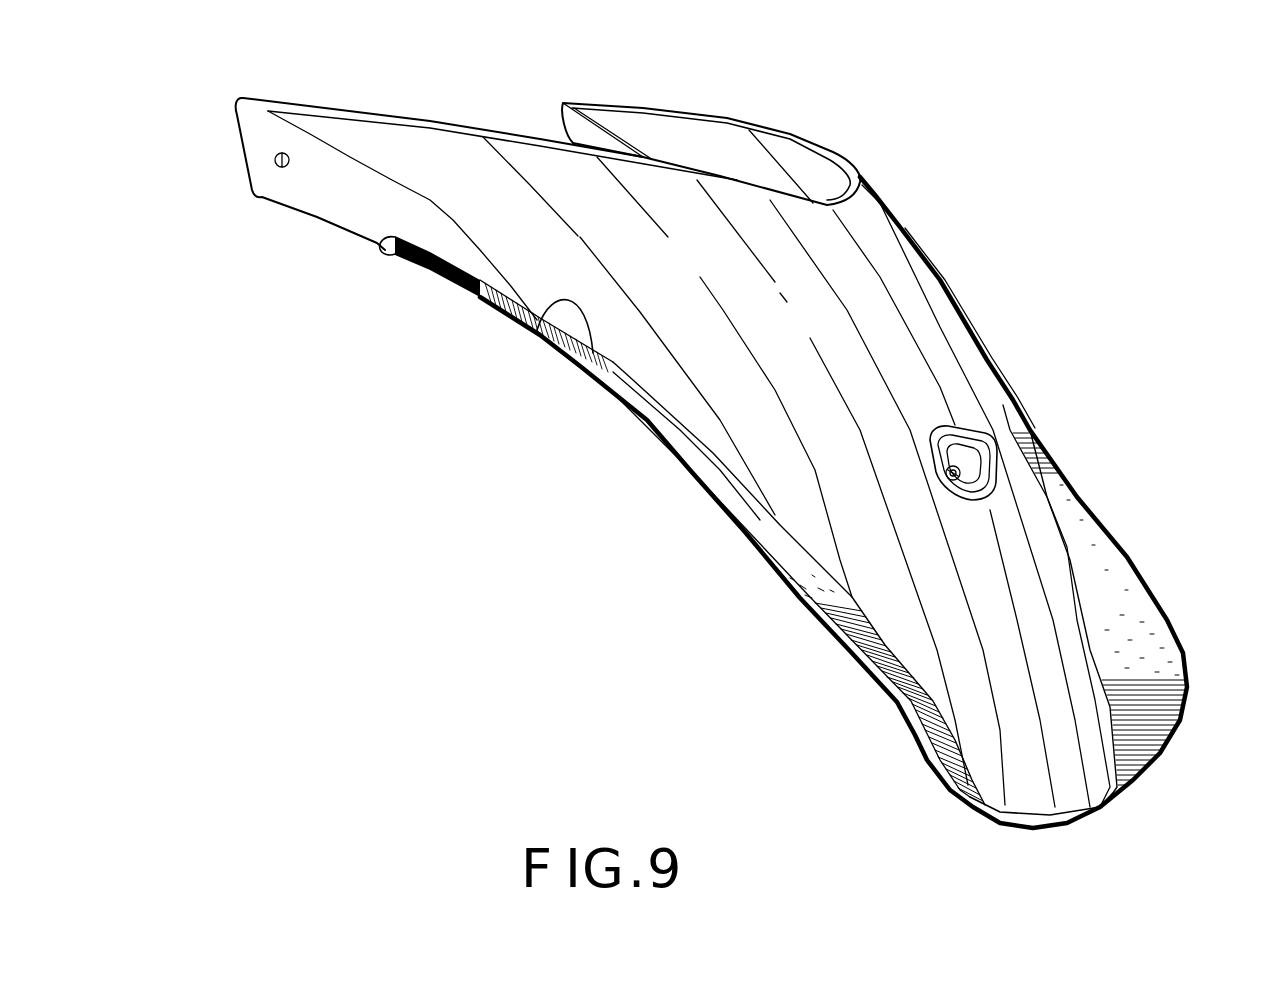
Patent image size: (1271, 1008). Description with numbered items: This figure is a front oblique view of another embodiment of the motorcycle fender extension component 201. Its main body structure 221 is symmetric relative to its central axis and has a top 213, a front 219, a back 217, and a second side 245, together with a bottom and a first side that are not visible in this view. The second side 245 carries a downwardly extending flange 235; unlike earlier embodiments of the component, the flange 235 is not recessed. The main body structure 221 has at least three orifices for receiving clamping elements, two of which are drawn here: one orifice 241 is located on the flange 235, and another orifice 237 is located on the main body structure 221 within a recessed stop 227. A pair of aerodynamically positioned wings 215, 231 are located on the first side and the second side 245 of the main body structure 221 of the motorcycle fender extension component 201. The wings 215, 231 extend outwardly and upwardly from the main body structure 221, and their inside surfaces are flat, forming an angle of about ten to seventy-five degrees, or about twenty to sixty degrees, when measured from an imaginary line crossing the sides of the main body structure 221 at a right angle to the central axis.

The motorcycle fender extension component 201 is at (1010, 220).
The top 213 is at (836, 444).
The wing 215 is at (1127, 624).
The back 217 is at (432, 112).
The front 219 is at (1050, 826).
The main body structure 221 is at (880, 205).
The recessed stop 227 is at (969, 438).
The wing 231 is at (836, 634).
The downwardly extending flange 235 is at (367, 208).
The orifice 237 is at (958, 475).
The orifice 241 is at (276, 167).
The second side 245 is at (537, 330).